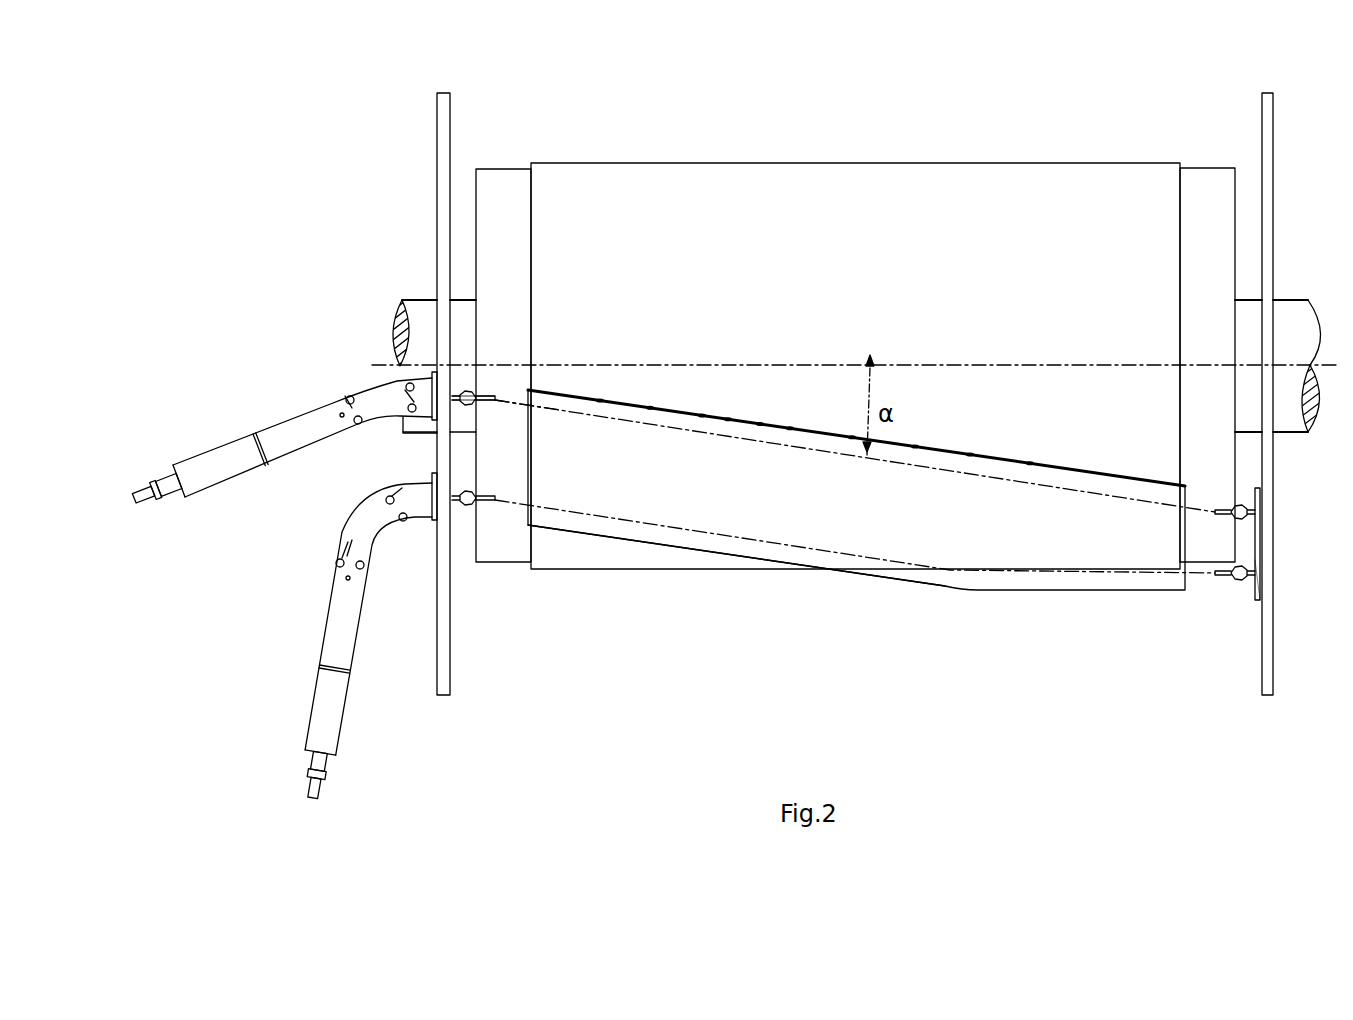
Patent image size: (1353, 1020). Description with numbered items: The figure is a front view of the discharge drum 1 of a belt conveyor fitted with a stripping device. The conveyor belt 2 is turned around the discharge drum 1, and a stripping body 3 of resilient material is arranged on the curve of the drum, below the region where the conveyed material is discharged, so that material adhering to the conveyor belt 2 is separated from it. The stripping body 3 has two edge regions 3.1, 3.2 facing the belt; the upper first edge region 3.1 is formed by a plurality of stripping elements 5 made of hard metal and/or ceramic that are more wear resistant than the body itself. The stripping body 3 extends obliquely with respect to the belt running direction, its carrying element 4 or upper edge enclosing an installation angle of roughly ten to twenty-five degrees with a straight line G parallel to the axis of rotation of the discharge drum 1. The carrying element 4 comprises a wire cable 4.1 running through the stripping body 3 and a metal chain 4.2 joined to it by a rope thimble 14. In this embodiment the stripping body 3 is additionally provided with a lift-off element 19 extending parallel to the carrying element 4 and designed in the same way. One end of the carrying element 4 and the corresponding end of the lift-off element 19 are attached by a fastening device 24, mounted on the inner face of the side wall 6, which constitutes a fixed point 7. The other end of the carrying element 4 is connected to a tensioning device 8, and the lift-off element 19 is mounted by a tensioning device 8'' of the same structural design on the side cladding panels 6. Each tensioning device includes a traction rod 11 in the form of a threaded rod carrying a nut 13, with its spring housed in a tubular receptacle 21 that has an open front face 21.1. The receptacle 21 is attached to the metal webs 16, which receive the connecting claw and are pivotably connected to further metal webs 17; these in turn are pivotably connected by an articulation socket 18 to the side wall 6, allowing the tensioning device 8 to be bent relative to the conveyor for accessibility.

The discharge drum 1 is at (1207, 183).
The conveyor belt 2 is at (1054, 185).
The stripping body 3 is at (856, 486).
The first edge region 3.1 is at (630, 403).
The second edge region 3.2 is at (615, 538).
The carrying element 4 is at (1193, 503).
The wire cable 4.1 is at (510, 402).
The metal chain 4.2 is at (462, 393).
The stripping elements 5 is at (790, 428).
The side cladding panels 6 is at (447, 660).
The fixed point 7 is at (1258, 547).
The tensioning device 8 is at (279, 455).
The tensioning device 8'' is at (318, 636).
The traction rod 11 is at (142, 505).
The nut 13 is at (167, 480).
The rope thimble 14 is at (473, 488).
The metal webs 16 is at (298, 423).
The further metal webs 17 is at (378, 395).
The articulation socket 18 is at (422, 415).
The lift-off element 19 is at (505, 512).
The receptacle 21 is at (238, 477).
The open front face 21.1 is at (182, 497).
The fastening device 24 is at (1242, 597).
The straight line G is at (1075, 362).